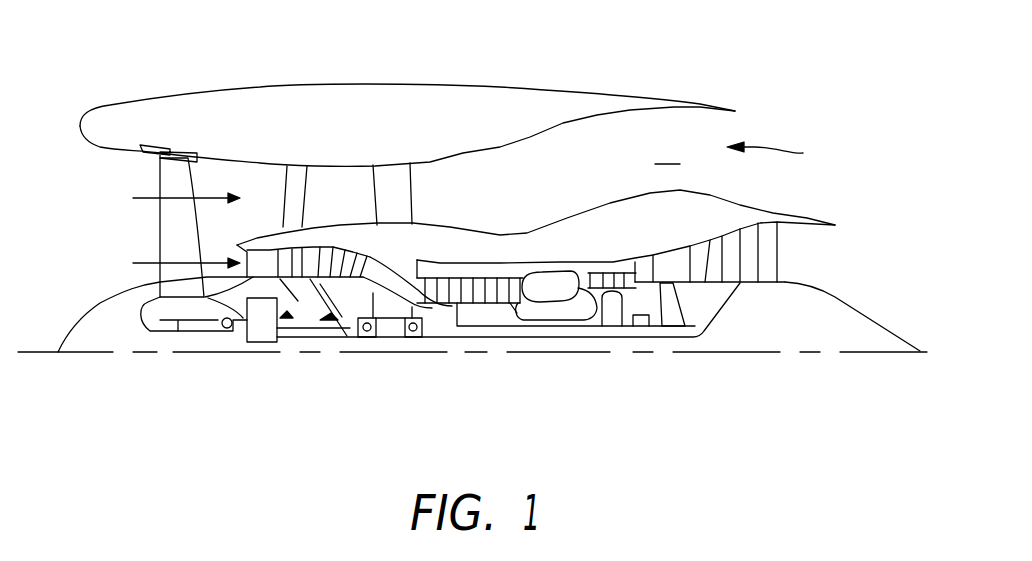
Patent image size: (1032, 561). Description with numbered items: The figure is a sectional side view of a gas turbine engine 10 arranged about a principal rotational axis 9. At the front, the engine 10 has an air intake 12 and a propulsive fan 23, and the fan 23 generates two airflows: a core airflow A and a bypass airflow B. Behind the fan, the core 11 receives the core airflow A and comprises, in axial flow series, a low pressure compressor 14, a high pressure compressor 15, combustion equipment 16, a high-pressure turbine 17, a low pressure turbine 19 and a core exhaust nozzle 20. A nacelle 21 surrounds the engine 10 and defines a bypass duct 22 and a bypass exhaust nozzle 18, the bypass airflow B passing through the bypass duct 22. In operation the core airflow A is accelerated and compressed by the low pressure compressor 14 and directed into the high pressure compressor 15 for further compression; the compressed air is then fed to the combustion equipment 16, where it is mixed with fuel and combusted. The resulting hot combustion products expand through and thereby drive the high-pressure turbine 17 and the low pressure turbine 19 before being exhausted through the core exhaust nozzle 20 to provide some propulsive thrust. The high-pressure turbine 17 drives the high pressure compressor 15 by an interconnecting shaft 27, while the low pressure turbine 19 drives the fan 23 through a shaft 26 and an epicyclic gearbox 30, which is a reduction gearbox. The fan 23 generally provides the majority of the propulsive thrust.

The principal rotational axis 9 is at (787, 357).
The gas turbine engine 10 is at (155, 98).
The core 11 is at (527, 227).
The air intake 12 is at (100, 173).
The low pressure compressor 14 is at (330, 254).
The high pressure compressor 15 is at (477, 287).
The combustion equipment 16 is at (550, 288).
The high-pressure turbine 17 is at (612, 273).
The bypass exhaust nozzle 18 is at (776, 155).
The low pressure turbine 19 is at (750, 243).
The core exhaust nozzle 20 is at (807, 253).
The nacelle 21 is at (388, 96).
The bypass duct 22 is at (667, 152).
The propulsive fan 23 is at (163, 230).
The shaft 26 is at (468, 337).
The interconnecting shaft 27 is at (507, 326).
The epicyclic gearbox 30 is at (257, 332).